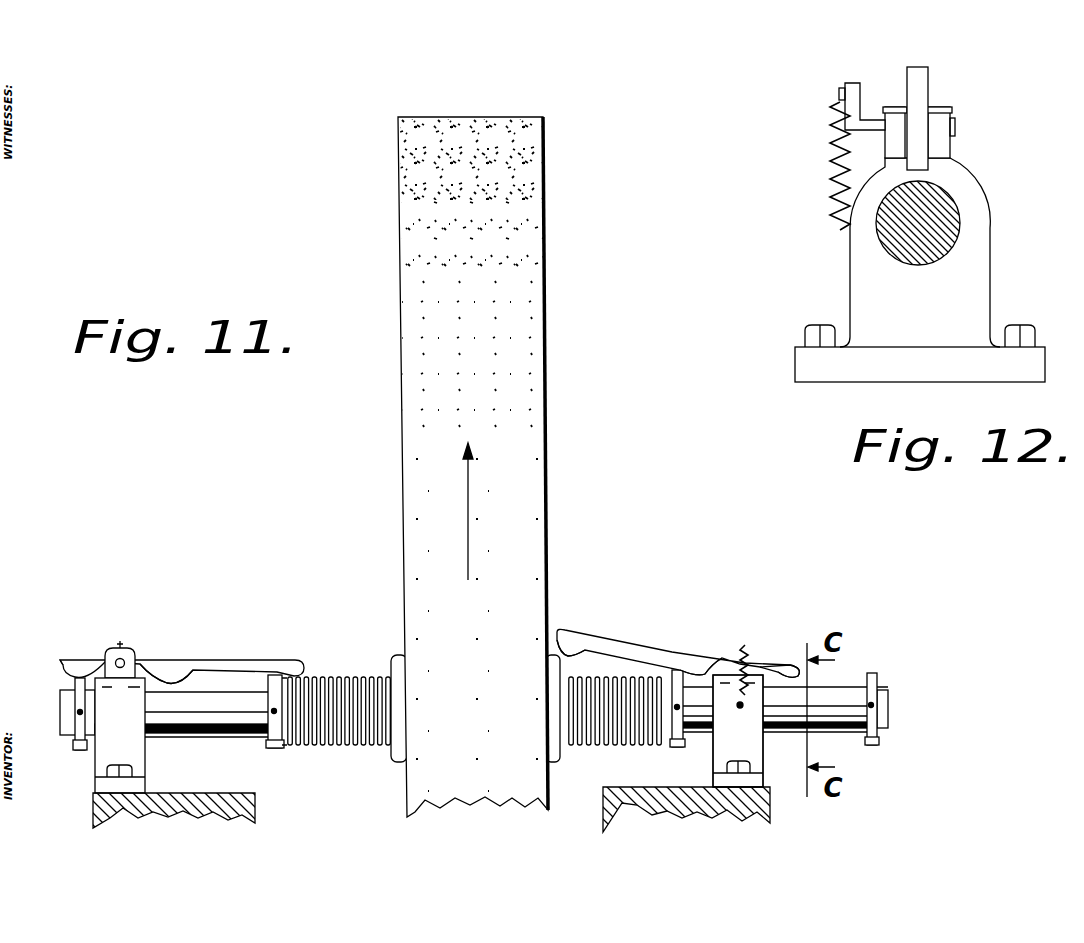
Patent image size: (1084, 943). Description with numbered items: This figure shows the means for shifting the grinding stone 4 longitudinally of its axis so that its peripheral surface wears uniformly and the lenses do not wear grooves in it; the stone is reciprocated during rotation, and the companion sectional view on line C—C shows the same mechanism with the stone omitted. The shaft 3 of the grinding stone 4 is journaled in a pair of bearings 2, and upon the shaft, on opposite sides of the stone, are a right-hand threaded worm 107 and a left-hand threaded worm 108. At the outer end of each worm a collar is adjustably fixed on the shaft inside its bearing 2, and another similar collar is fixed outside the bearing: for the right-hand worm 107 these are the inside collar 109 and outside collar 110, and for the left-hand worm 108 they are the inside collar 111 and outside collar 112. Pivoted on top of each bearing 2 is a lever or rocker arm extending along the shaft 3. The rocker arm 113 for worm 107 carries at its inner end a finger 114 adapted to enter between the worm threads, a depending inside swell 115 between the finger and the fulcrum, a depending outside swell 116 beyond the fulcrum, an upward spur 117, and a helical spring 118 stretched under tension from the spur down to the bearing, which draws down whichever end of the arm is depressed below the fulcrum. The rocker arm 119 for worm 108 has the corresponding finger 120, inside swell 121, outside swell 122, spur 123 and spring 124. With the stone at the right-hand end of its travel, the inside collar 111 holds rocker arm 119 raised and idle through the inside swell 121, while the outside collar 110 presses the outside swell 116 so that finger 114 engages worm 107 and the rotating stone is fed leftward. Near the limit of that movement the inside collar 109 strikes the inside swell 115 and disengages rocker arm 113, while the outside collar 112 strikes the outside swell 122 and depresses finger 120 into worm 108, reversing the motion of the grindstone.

In FIG. 12, the bearing 2 is at (968, 297).
In FIG. 11, the shaft 3 is at (882, 717).
In FIG. 12, the shaft 3 is at (937, 230).
In FIG. 11, the grinding stone 4 is at (528, 290).
In FIG. 11, the right-hand threaded worm 107 is at (347, 748).
In FIG. 11, the left-hand threaded worm 108 is at (623, 742).
In FIG. 11, the inside collar 109 is at (275, 680).
In FIG. 11, the outside collar 110 is at (77, 686).
In FIG. 11, the inside collar 111 is at (674, 671).
In FIG. 11, the outside collar 112 is at (873, 678).
In FIG. 11, the lever or rocker arm 113 is at (222, 658).
In FIG. 11, the finger 114 is at (293, 677).
In FIG. 11, the inside swell 115 is at (167, 681).
In FIG. 11, the outside swell 116 is at (80, 680).
In FIG. 11, the spur 117 is at (122, 642).
In FIG. 11, the helical spring 118 is at (133, 645).
In FIG. 11, the lever or rocker arm 119 is at (620, 647).
In FIG. 12, the lever or rocker arm 119 is at (915, 75).
In FIG. 11, the finger 120 is at (593, 659).
In FIG. 11, the inside swell 121 is at (692, 672).
In FIG. 11, the outside swell 122 is at (778, 673).
In FIG. 12, the outside swell 122 is at (920, 165).
In FIG. 11, the spur 123 is at (747, 646).
In FIG. 12, the spur 123 is at (855, 88).
In FIG. 11, the helical spring 124 is at (740, 710).
In FIG. 12, the helical spring 124 is at (835, 137).